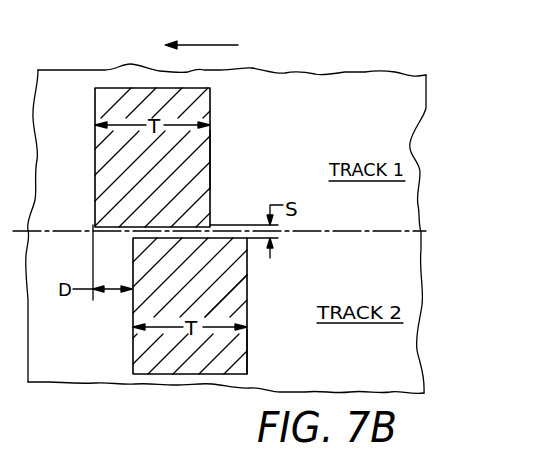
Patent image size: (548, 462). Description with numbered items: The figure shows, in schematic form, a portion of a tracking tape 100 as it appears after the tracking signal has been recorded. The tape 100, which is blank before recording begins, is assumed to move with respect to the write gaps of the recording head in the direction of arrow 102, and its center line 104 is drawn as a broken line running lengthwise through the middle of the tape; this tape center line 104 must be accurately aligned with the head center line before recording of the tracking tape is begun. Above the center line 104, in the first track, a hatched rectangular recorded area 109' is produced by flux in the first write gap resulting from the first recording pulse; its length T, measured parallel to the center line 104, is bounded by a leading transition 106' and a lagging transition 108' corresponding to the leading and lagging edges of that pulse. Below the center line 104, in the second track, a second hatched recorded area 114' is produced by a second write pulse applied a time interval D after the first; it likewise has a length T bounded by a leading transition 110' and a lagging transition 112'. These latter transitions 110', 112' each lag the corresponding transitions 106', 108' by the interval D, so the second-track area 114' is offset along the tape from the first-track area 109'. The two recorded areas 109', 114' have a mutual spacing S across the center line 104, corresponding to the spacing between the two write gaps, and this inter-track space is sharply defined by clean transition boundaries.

The tracking tape 100 is at (366, 83).
The arrow 102 is at (205, 45).
The tape center line 104 is at (320, 231).
The leading transition 106' is at (127, 157).
The lagging transition 108' is at (242, 160).
The recorded area 109' is at (236, 107).
The leading transition 110' is at (154, 306).
The lagging transition 112' is at (281, 352).
The recorded area 114' is at (257, 291).